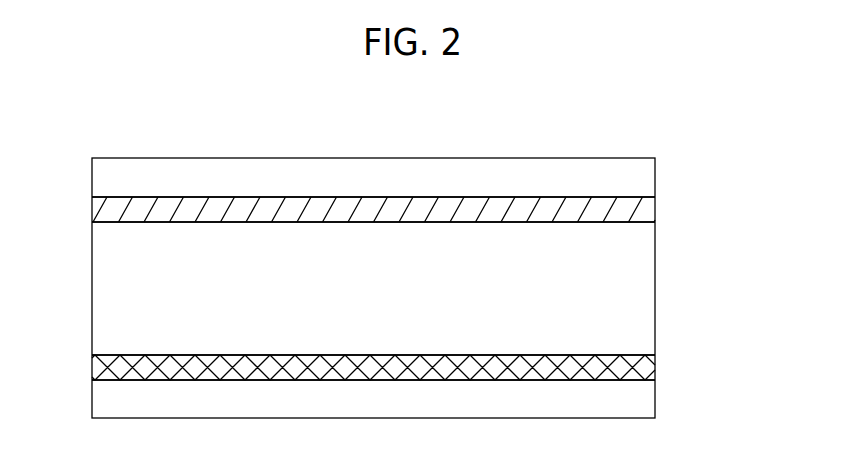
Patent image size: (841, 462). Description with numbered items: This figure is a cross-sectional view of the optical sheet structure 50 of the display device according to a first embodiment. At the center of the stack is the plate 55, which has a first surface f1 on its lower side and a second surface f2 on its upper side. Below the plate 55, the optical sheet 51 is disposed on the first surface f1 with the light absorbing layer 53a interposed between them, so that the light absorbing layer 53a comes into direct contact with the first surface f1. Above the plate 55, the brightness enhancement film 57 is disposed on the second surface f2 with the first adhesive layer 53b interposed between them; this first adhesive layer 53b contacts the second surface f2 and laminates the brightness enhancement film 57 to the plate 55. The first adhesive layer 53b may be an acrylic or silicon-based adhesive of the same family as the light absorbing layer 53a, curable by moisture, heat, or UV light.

The optical sheet structure 50 is at (712, 173).
The optical sheet 51 is at (637, 401).
The light absorbing layer 53a is at (635, 366).
The first adhesive layer 53b is at (638, 210).
The plate 55 is at (637, 283).
The brightness enhancement film 57 is at (638, 180).
The first surface f1 is at (144, 350).
The second surface f2 is at (144, 227).